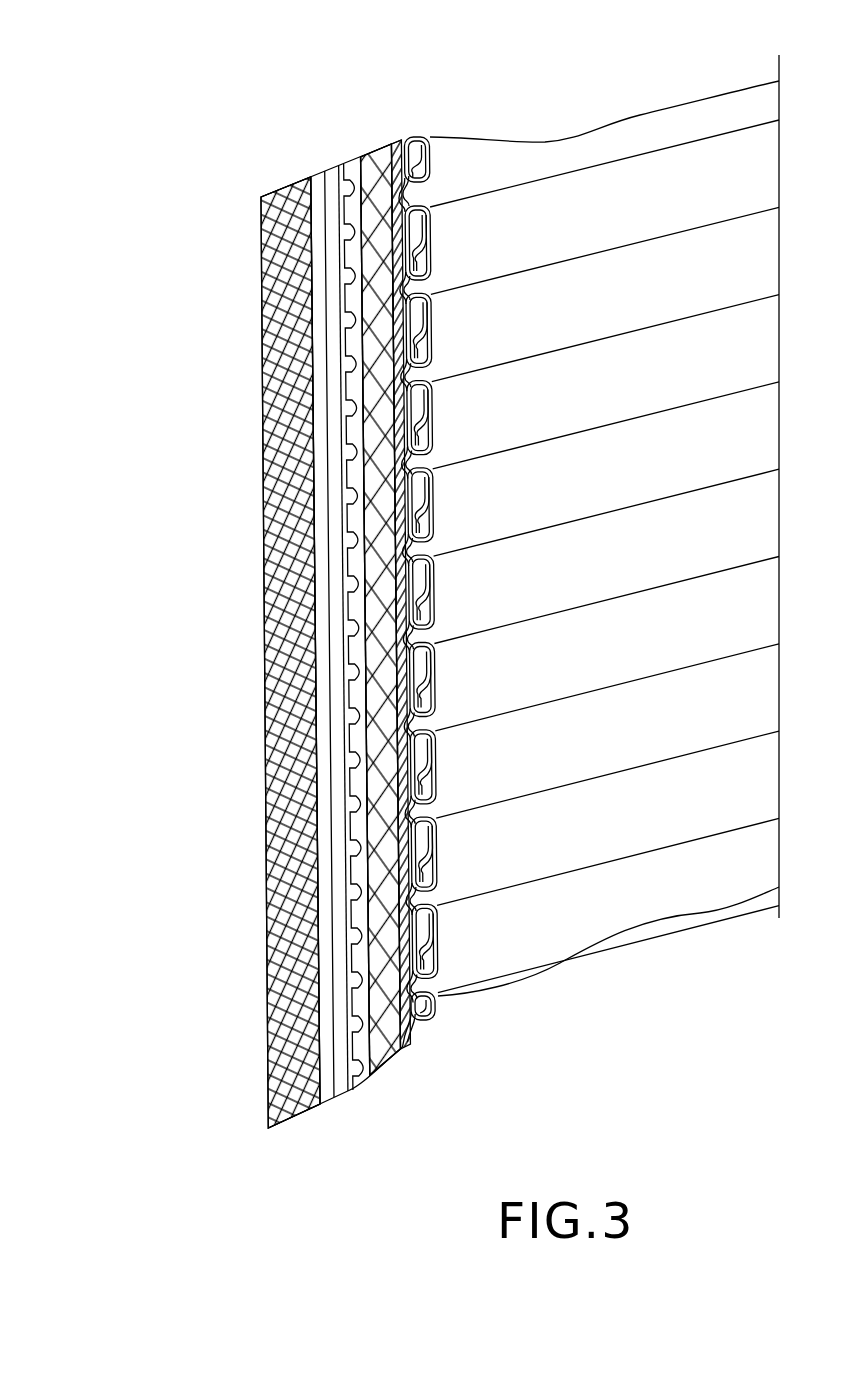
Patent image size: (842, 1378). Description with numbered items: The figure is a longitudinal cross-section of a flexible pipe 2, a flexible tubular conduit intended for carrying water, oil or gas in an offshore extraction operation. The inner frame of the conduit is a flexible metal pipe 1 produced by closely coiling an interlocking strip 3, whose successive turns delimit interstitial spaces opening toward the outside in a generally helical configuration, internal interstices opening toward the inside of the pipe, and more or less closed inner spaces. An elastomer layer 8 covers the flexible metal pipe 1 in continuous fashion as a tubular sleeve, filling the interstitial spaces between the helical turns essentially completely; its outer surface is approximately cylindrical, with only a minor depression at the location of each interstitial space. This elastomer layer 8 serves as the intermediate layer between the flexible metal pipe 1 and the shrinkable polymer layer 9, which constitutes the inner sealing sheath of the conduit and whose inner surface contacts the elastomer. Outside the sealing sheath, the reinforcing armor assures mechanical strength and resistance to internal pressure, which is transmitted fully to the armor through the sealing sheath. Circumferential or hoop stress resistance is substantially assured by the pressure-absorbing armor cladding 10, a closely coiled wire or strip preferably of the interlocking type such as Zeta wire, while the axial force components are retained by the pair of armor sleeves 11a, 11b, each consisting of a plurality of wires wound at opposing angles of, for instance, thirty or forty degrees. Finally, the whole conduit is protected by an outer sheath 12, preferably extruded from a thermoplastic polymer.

The flexible metal pipe 1 is at (686, 914).
The flexible pipe 2 is at (244, 254).
The interlocking strip 3 is at (370, 617).
The elastomer layer 8 is at (399, 143).
The shrinkable polymer layer 9 is at (374, 148).
The pressure-absorbing armor cladding 10 is at (352, 160).
The armor sleeve 11a is at (331, 168).
The armor sleeve 11b is at (317, 172).
The outer sheath 12 is at (298, 186).